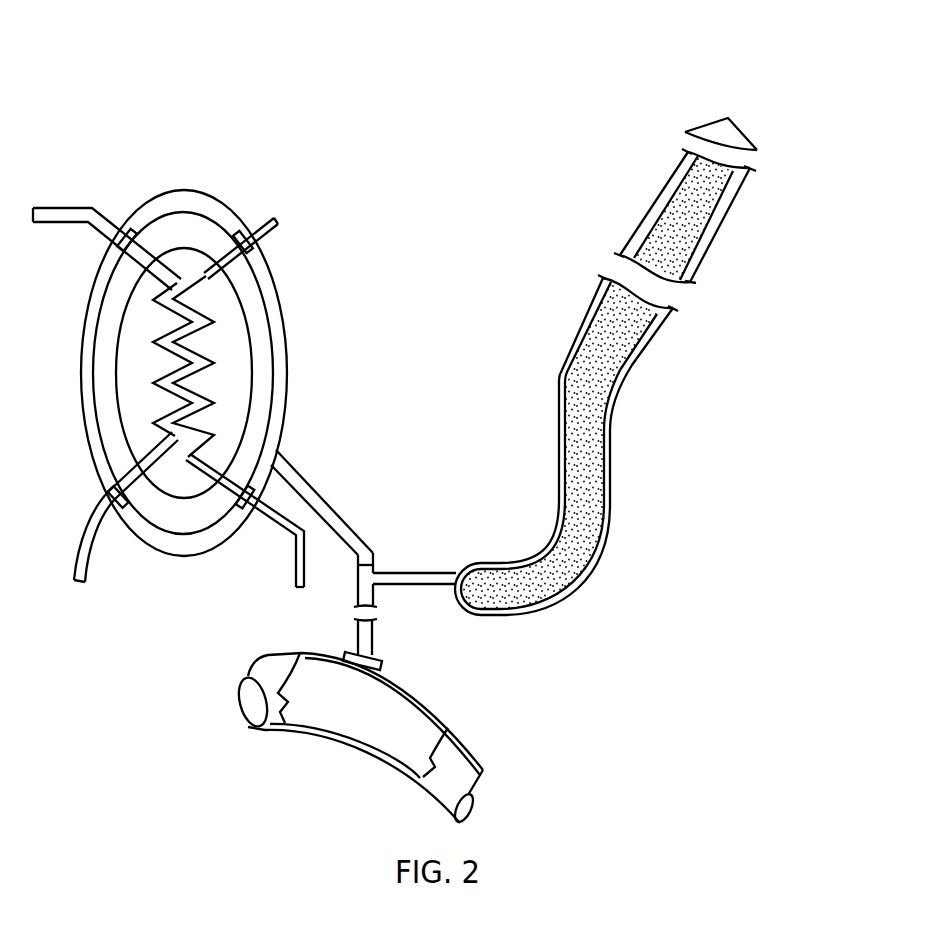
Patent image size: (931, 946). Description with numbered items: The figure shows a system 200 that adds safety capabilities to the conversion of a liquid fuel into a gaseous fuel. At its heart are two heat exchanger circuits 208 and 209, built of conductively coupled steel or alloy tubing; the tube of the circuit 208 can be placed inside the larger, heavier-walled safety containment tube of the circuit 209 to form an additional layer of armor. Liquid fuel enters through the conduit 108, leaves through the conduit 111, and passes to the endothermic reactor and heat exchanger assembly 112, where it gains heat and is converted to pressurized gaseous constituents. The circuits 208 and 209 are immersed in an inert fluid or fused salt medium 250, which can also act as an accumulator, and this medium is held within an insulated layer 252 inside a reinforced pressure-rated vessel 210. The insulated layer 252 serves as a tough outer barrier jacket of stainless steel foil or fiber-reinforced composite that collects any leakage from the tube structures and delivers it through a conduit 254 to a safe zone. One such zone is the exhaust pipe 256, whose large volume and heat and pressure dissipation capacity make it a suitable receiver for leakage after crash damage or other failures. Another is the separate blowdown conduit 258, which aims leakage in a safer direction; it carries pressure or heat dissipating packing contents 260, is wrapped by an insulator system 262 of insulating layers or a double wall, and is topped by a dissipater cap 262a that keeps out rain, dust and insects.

The system 200 is at (188, 88).
The heat exchanger circuit 209 is at (65, 207).
The conduit 108 is at (280, 223).
The heat exchanger circuit 208 is at (204, 284).
The pressure-rated vessel 210 is at (257, 323).
The fused salt medium 250 is at (237, 383).
The insulated layer 252 is at (280, 442).
The conduit 254 is at (338, 508).
The endothermic reactor and heat exchanger assembly 112 is at (85, 573).
The conduit 111 is at (290, 583).
The exhaust pipe 256 is at (412, 690).
The insulator system 262 is at (578, 328).
The conduit 258 is at (640, 363).
The packing contents 260 is at (600, 456).
The dissipater cap 262a is at (752, 150).